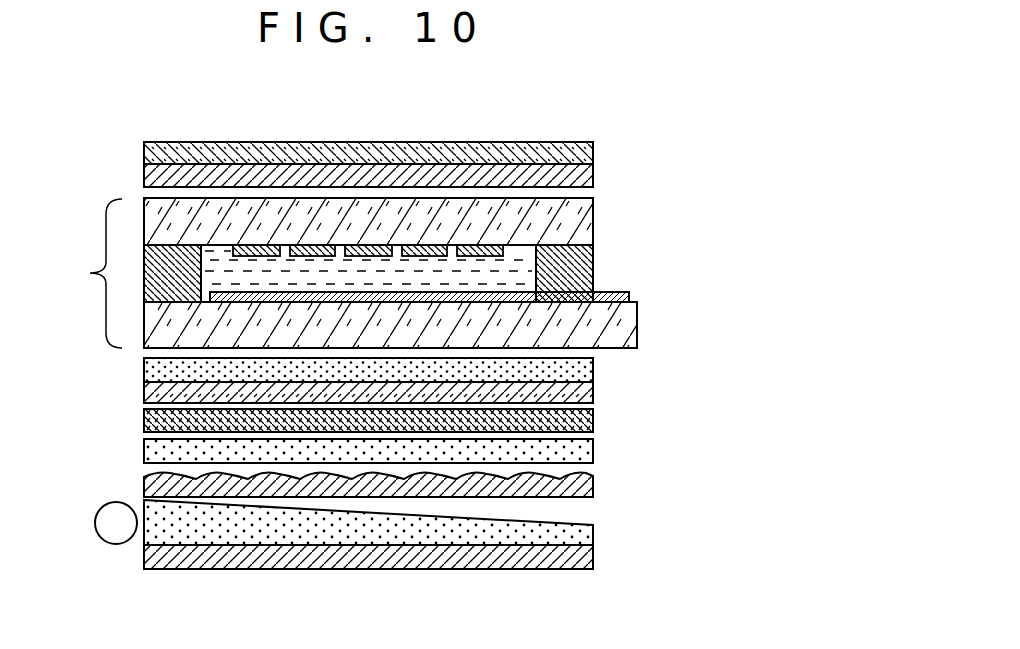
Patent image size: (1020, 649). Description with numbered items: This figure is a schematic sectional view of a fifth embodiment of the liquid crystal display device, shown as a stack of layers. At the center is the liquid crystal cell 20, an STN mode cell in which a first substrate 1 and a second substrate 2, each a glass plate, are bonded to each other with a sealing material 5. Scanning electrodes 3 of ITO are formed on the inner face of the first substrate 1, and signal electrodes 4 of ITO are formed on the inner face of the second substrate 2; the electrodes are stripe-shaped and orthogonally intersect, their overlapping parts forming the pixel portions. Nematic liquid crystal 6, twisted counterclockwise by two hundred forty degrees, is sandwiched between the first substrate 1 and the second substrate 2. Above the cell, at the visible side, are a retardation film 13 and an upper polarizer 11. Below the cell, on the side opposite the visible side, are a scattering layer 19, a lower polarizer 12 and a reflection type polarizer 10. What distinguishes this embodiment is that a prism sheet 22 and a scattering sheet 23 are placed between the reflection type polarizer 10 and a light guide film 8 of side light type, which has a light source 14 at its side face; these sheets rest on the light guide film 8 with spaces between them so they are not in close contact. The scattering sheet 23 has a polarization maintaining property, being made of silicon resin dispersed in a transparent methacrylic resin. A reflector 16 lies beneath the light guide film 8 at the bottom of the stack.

The first substrate 1 is at (618, 329).
The second substrate 2 is at (575, 223).
The scanning electrodes 3 is at (629, 298).
The signal electrodes 4 is at (377, 250).
The sealing material 5 is at (578, 267).
The nematic liquid crystal 6 is at (216, 268).
The light guide film 8 is at (578, 536).
The reflection type polarizer 10 is at (580, 422).
The upper polarizer 11 is at (593, 153).
The lower polarizer 12 is at (593, 393).
The retardation plate 13 is at (593, 178).
The light source 14 is at (108, 527).
The reflector 16 is at (580, 559).
The scattering layer 19 is at (593, 366).
The liquid crystal cell 20 is at (78, 291).
The prism sheet 22 is at (585, 488).
The scattering sheet 23 is at (585, 450).